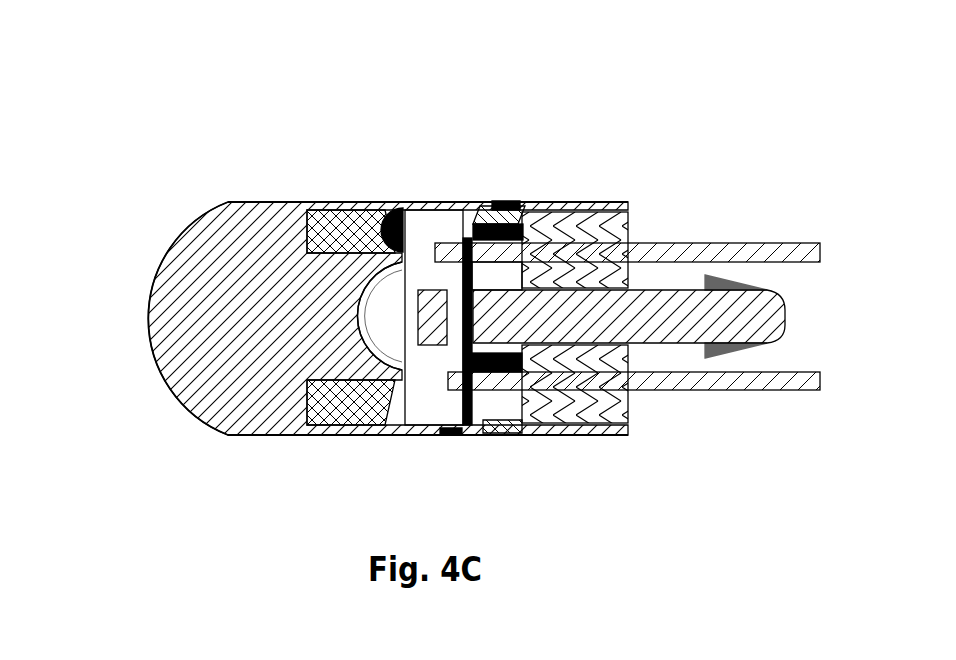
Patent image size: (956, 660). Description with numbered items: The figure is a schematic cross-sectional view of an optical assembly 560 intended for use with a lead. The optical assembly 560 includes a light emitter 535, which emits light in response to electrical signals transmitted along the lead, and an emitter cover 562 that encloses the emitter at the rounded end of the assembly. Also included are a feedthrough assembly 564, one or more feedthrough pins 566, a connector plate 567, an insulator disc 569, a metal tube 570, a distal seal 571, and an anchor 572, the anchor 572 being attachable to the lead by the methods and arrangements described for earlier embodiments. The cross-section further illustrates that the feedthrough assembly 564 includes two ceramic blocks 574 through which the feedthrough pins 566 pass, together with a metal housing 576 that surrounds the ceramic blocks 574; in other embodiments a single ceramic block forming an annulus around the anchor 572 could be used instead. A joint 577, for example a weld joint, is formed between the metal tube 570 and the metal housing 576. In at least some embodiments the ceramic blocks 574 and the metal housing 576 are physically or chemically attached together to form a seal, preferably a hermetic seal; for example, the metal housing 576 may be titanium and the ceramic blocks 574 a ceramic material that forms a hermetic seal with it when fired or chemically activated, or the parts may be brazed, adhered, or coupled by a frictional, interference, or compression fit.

The optical assembly 560 is at (211, 113).
The emitter cover 562 is at (183, 247).
The feedthrough assembly 564 is at (614, 314).
The feedthrough pins 566 is at (755, 247).
The connector plate 567 is at (452, 220).
The insulator disc 569 is at (463, 433).
The metal tube 570 is at (390, 202).
The distal seal 571 is at (340, 220).
The anchor 572 is at (783, 322).
The ceramic blocks 574 is at (578, 222).
The metal housing 576 is at (528, 200).
The joint 577 is at (493, 433).
The light emitter 535 is at (447, 325).